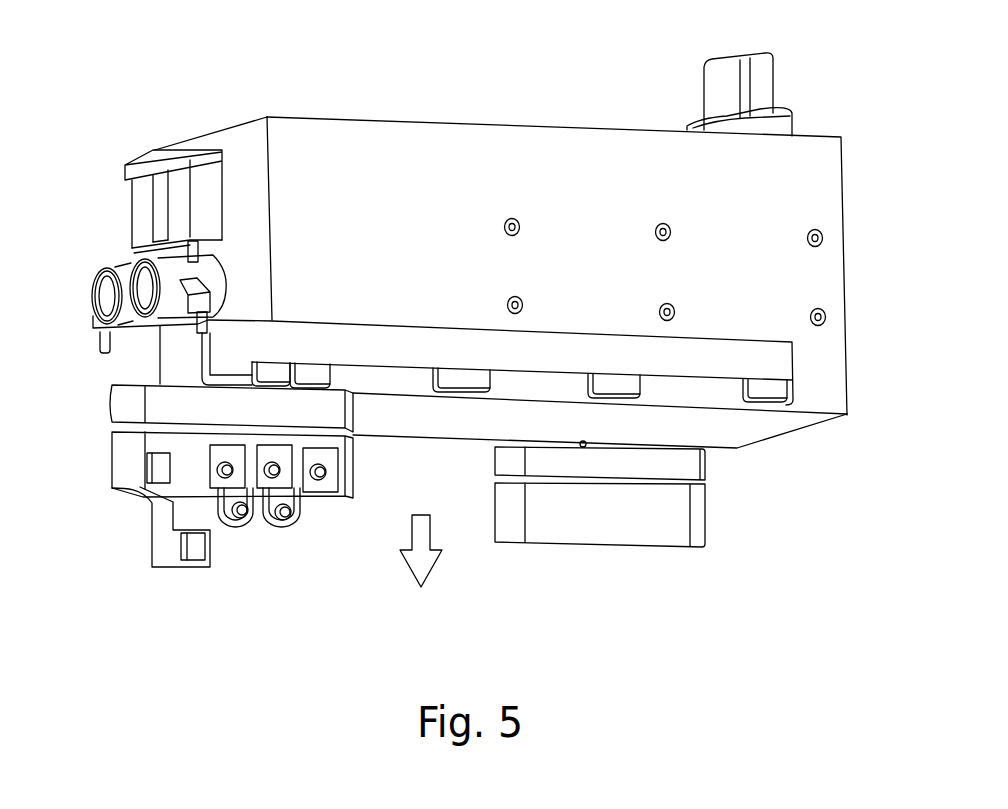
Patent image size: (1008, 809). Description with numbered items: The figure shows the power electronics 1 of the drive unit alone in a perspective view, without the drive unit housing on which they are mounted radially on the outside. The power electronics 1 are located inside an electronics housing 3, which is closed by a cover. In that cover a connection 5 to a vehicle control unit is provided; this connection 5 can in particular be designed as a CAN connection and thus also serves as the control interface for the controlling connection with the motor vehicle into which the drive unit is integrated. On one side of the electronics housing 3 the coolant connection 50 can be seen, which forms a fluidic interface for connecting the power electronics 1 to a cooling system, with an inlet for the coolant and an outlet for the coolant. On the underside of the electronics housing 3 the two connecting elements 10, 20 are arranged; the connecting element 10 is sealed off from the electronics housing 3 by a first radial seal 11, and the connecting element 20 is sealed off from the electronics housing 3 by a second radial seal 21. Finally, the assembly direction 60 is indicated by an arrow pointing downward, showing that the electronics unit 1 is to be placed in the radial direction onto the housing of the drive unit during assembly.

The power electronics 1 is at (470, 238).
The electronics housing 3 is at (566, 165).
The connection to a vehicle control unit 5 is at (760, 78).
The coolant connection 50 is at (124, 272).
The second radial seal 21 is at (123, 426).
The connecting element 20 is at (178, 552).
The assembly direction 60 is at (417, 562).
The first radial seal 11 is at (700, 482).
The connecting element 10 is at (682, 535).